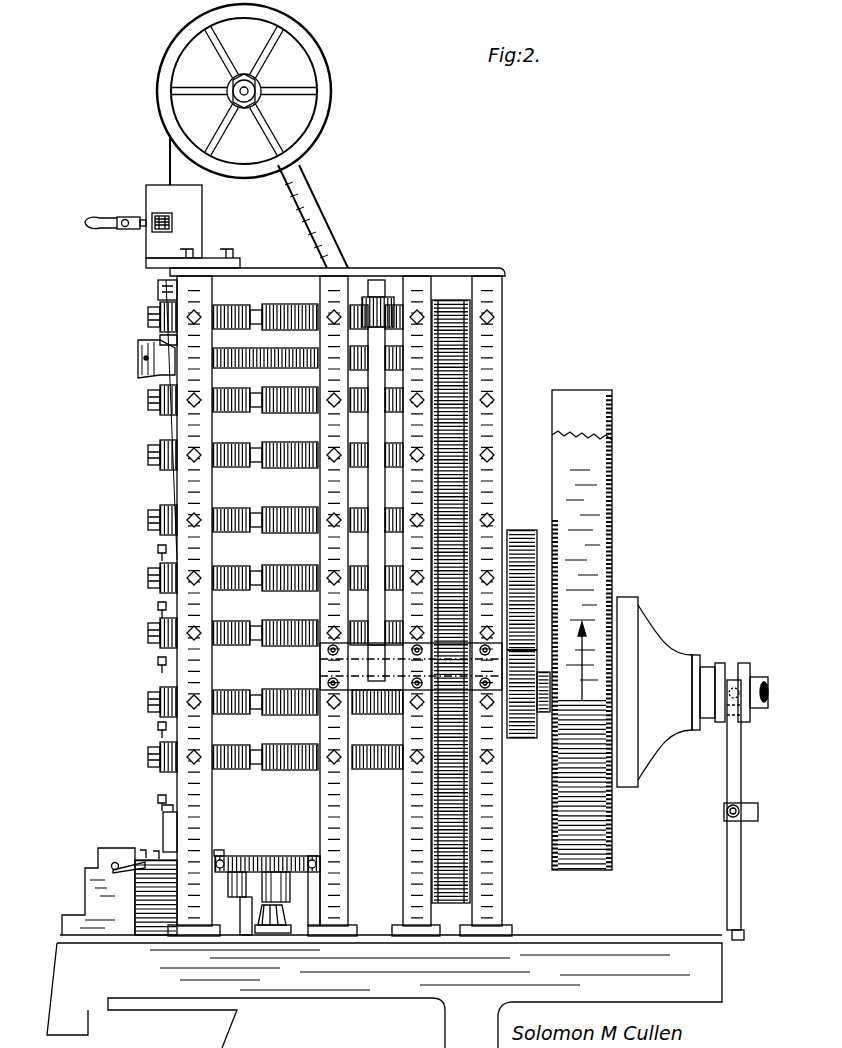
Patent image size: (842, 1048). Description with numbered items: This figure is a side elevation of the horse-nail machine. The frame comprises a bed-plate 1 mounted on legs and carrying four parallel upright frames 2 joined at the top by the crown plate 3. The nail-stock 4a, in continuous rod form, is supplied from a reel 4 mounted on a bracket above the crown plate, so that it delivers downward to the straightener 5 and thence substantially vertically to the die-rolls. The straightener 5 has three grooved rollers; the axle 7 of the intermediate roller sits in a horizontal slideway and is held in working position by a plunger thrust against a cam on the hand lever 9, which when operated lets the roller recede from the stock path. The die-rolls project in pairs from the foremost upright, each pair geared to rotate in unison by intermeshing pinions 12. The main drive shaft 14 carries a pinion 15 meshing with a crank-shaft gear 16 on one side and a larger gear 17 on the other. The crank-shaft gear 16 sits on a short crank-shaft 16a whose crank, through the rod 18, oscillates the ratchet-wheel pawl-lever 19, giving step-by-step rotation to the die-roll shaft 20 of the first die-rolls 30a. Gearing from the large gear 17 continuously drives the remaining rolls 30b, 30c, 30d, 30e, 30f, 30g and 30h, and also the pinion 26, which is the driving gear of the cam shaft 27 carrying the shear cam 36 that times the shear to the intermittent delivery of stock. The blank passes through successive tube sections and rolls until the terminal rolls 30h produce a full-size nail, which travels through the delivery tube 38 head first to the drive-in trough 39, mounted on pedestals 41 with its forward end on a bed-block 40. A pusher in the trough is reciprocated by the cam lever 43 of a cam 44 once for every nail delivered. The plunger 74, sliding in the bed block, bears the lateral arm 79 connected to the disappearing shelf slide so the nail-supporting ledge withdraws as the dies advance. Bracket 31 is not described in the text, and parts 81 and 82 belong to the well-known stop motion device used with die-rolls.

The bed-plate 1 is at (592, 942).
The upright frames 2 is at (210, 295).
The crown plate 3 is at (415, 268).
The reel 4 is at (327, 80).
The nail-stock 4a is at (168, 152).
The straightener 5 is at (204, 206).
The axle of the intermediate roller 7 is at (157, 230).
The hand lever 9 is at (88, 230).
The intermeshing pinions 12 is at (270, 725).
The main drive shaft 14 is at (545, 715).
The pinion 15 is at (522, 742).
The crank-shaft gear 16 is at (538, 627).
The crank-shaft 16a is at (455, 672).
The large gear 17 is at (520, 530).
The rod 18 is at (430, 603).
The ratchet-wheel pawl-lever 19 is at (395, 302).
The die-roll shaft 20 is at (238, 526).
The pinion 26 is at (472, 358).
The cam shaft 27 is at (265, 349).
The die-rolls 30a is at (148, 318).
The die rolls 30b is at (148, 402).
The rolls 30c is at (148, 456).
The rolls 30d is at (148, 520).
The die-rolls 30e is at (148, 578).
The die-rolls 30f is at (148, 634).
The die-rolls 30g is at (148, 703).
The die-rolls 30h is at (148, 759).
The bracket 31 is at (160, 293).
The shear cam 36 is at (137, 360).
The delivery tube 38 is at (165, 832).
The drive-in trough 39 is at (232, 857).
The bed-block 40 is at (50, 928).
The pedestals 41 is at (312, 900).
The cam lever 43 is at (292, 915).
The cam 44 is at (270, 880).
The plunger 74 is at (97, 862).
The arm 79 is at (125, 875).
The stop motion device part 81 is at (727, 830).
The stop motion device part 82 is at (643, 630).